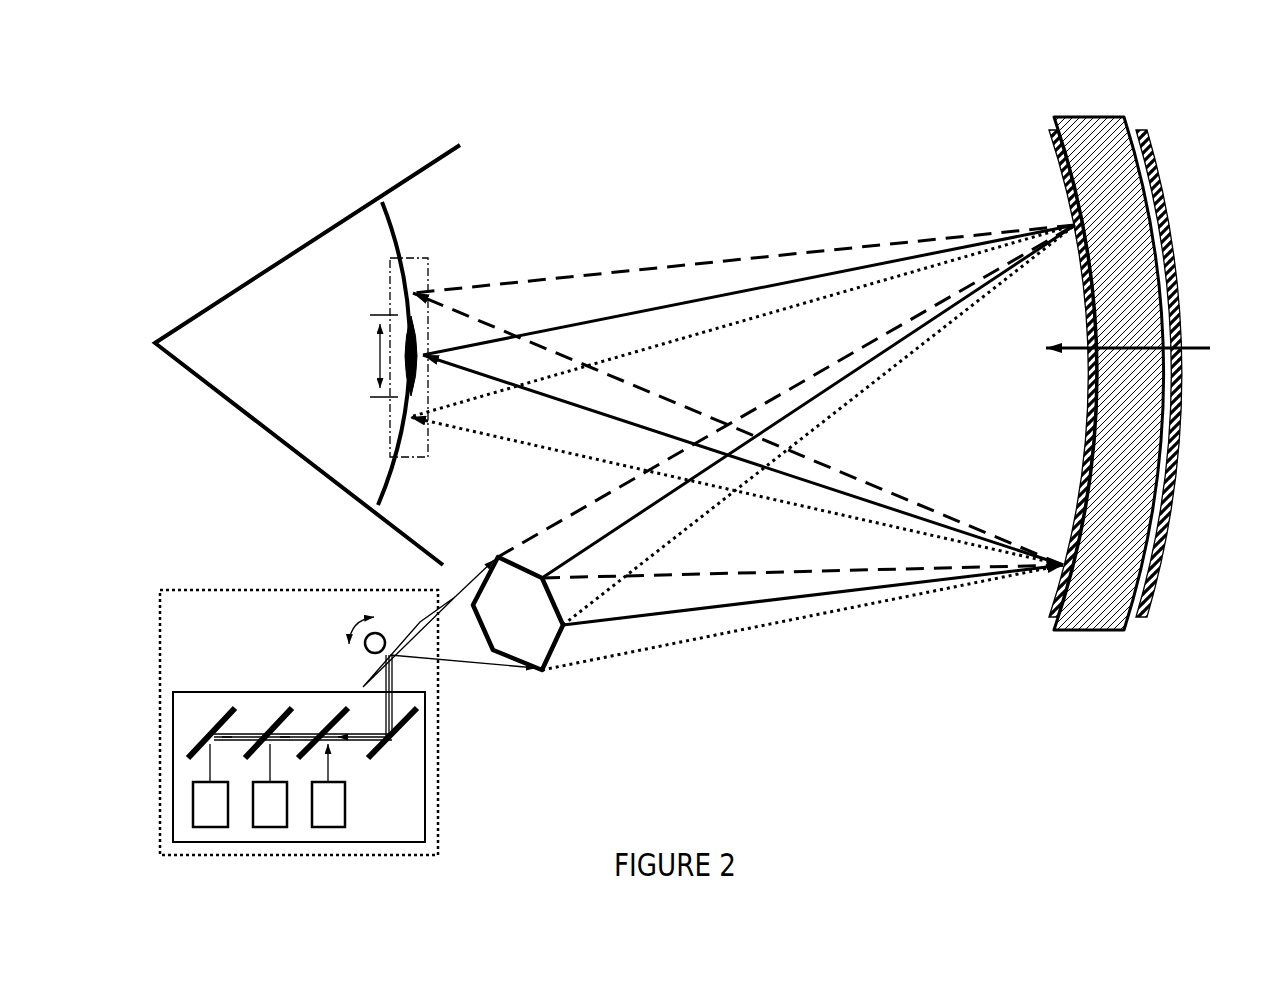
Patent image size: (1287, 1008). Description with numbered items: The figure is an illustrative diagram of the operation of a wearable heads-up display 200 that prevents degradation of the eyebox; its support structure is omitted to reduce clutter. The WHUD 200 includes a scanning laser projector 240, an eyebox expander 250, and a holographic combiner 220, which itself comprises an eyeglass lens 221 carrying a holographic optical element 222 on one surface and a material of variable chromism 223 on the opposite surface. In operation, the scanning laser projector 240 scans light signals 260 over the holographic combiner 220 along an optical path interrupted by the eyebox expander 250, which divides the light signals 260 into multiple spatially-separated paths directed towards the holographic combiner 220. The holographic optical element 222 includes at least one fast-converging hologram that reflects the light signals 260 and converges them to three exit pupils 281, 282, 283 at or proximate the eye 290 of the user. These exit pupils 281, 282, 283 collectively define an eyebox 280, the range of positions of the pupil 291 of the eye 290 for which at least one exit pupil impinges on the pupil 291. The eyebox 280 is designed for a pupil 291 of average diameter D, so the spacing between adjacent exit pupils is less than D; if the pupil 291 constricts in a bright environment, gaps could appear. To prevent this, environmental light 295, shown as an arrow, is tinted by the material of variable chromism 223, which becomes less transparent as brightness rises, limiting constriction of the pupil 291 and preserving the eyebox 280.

The wearable heads-up display 200 is at (150, 117).
The holographic combiner 220 is at (1091, 335).
The eyeglass lens 221 is at (1109, 373).
The holographic optical element 222 is at (1072, 170).
The material of variable chromism 223 is at (1175, 373).
The scanning laser projector 240 is at (175, 621).
The eyebox expander 250 is at (538, 648).
The light signals 260 is at (709, 542).
The eyebox 280 is at (390, 296).
The exit pupil 281 is at (415, 292).
The exit pupil 282 is at (425, 352).
The exit pupil 283 is at (409, 430).
The eye 290 is at (215, 354).
The pupil 291 is at (401, 352).
The environmental light 295 is at (1194, 346).